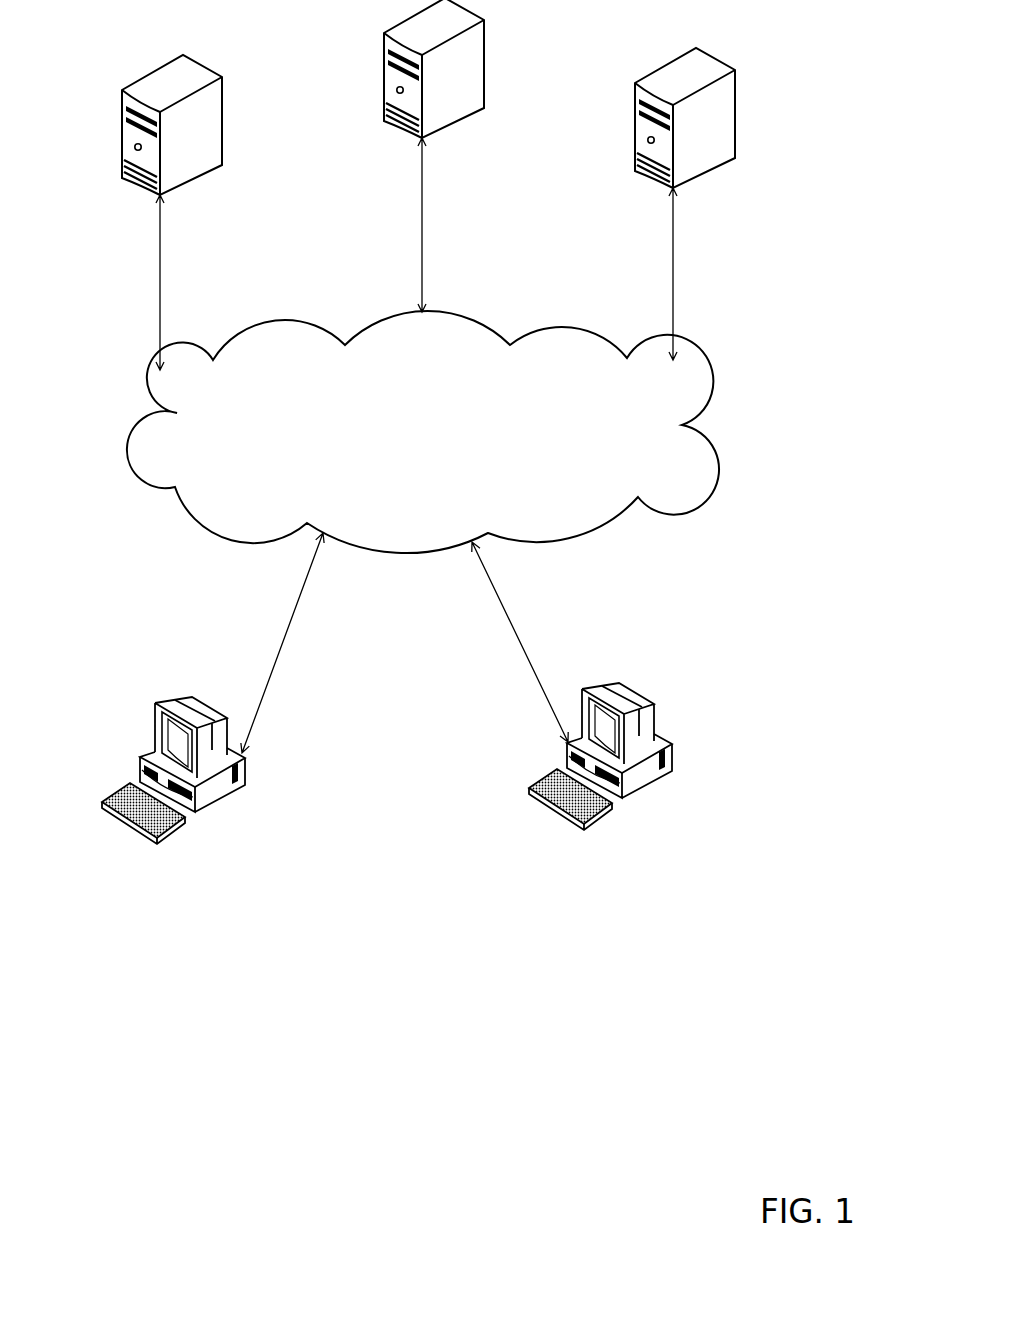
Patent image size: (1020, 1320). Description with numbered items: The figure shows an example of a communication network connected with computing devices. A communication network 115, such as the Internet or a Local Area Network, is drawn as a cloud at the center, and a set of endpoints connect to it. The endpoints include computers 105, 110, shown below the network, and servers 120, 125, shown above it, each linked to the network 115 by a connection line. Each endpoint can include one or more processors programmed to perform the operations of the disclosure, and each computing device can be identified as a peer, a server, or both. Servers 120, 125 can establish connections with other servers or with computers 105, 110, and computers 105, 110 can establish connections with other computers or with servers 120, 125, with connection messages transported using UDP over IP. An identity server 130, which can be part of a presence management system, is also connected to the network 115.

The computer 105 is at (173, 740).
The computer 110 is at (618, 728).
The communication network 115 is at (423, 409).
The server 120 is at (212, 125).
The server 125 is at (474, 69).
The identity server 130 is at (725, 118).